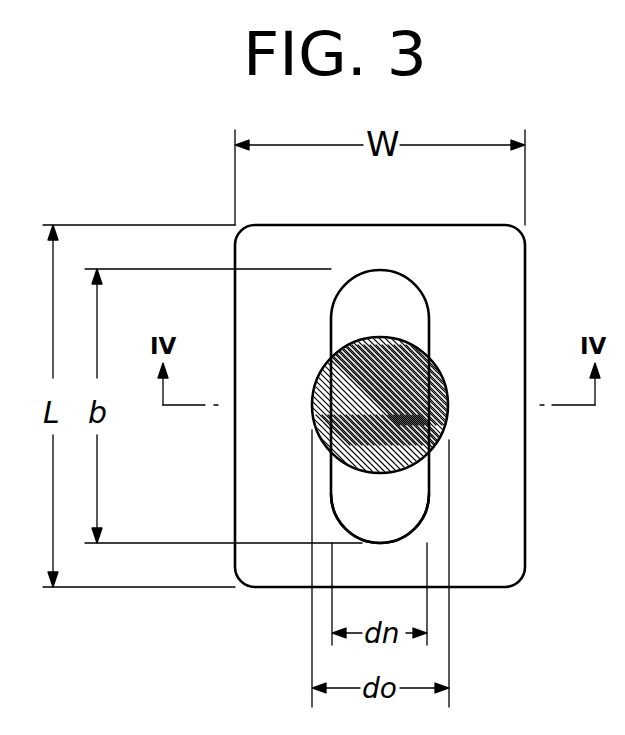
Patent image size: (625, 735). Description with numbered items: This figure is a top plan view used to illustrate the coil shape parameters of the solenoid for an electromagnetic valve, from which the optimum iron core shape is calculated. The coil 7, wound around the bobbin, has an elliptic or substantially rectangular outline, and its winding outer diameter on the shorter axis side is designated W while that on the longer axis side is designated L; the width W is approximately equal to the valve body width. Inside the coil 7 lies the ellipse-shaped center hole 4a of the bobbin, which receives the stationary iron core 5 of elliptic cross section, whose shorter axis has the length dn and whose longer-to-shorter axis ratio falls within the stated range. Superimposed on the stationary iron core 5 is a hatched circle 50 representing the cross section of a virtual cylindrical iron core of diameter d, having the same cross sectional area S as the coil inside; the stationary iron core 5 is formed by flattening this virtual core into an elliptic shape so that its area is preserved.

The coil 7 is at (513, 270).
The stationary iron core 5 is at (397, 288).
The center hole 4a is at (333, 494).
The circle 50 is at (437, 445).